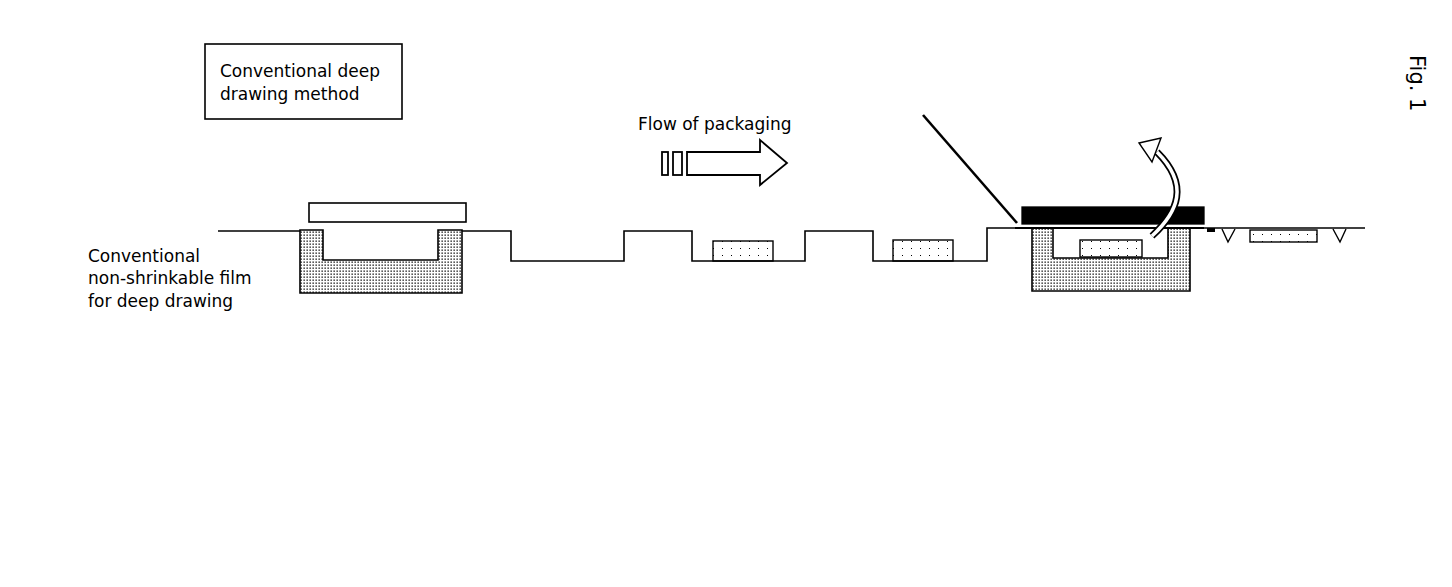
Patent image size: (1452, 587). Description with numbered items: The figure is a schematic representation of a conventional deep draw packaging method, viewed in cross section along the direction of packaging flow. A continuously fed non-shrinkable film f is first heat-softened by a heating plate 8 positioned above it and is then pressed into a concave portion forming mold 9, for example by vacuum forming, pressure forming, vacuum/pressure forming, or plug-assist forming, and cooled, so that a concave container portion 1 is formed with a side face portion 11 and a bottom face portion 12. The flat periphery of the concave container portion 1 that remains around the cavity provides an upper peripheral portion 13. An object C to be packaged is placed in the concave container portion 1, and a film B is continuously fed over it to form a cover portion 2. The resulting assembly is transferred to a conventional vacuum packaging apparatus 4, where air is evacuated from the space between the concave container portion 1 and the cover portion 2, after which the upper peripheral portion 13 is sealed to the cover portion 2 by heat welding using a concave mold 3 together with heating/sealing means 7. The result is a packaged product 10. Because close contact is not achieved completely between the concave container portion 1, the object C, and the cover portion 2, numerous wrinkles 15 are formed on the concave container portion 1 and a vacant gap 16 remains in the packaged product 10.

The concave container portion 1 is at (370, 306).
The cover portion 2 is at (1060, 227).
The concave mold 3 is at (1030, 283).
The conventional vacuum packaging apparatus 4 is at (1052, 293).
The heating/sealing means 7 is at (1020, 224).
The heating plate 8 is at (388, 203).
The concave portion forming mold 9 is at (435, 283).
The packaged product 10 is at (1291, 288).
The side face portion 11 is at (320, 247).
The bottom face portion 12 is at (338, 263).
The upper peripheral portion 13 is at (1030, 232).
The wrinkle 15 is at (1343, 262).
The vacant gap 16 is at (1241, 232).
The non-shrinkable film f is at (241, 231).
The film (for top film) B is at (945, 133).
The object to be packaged C is at (738, 240).